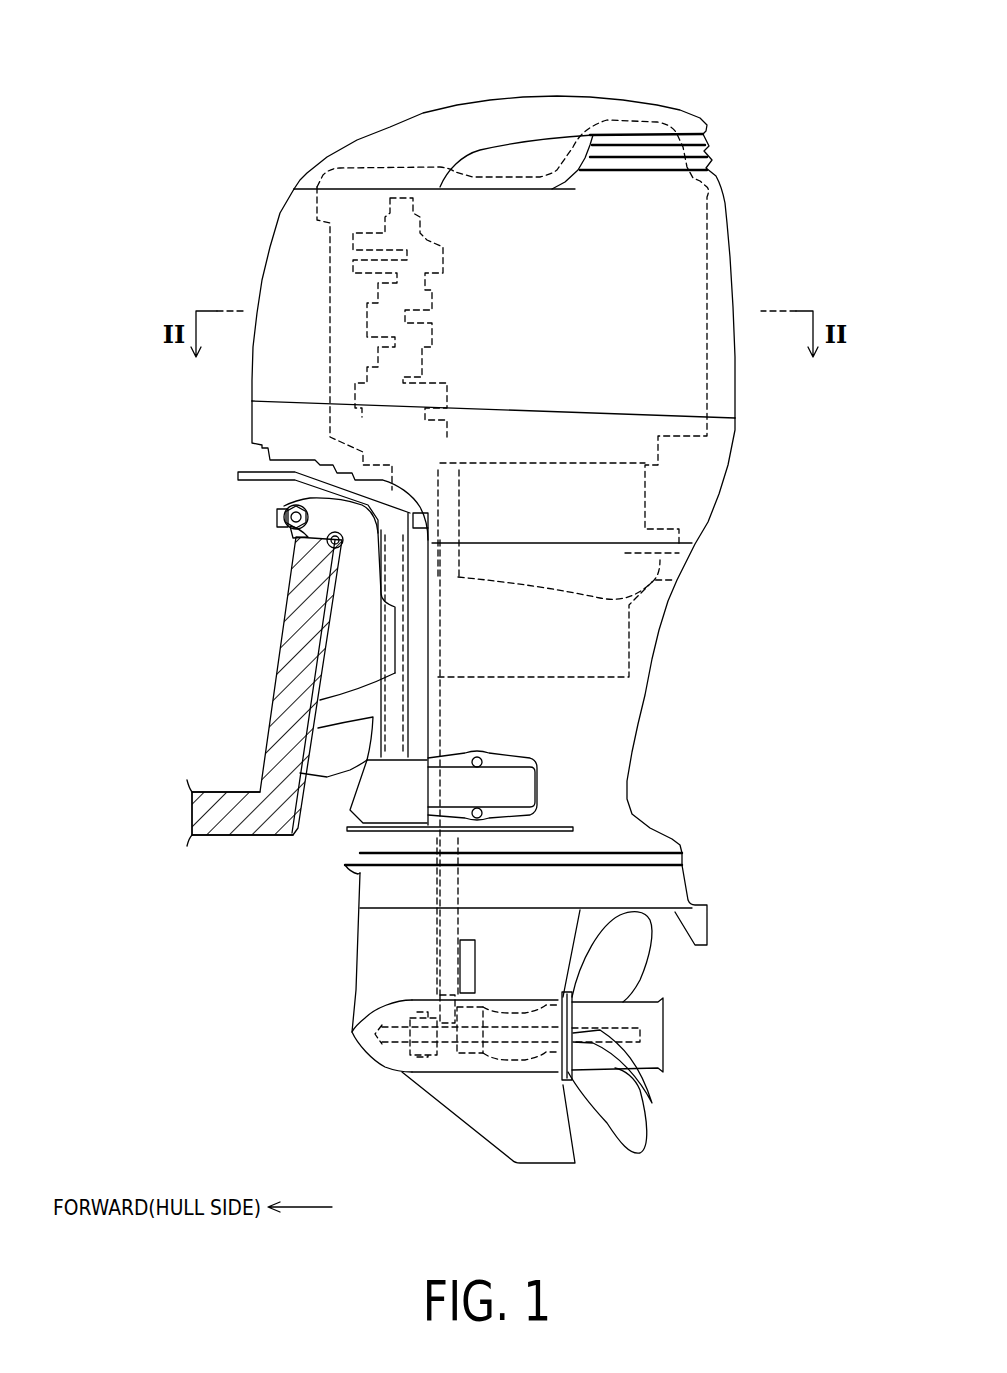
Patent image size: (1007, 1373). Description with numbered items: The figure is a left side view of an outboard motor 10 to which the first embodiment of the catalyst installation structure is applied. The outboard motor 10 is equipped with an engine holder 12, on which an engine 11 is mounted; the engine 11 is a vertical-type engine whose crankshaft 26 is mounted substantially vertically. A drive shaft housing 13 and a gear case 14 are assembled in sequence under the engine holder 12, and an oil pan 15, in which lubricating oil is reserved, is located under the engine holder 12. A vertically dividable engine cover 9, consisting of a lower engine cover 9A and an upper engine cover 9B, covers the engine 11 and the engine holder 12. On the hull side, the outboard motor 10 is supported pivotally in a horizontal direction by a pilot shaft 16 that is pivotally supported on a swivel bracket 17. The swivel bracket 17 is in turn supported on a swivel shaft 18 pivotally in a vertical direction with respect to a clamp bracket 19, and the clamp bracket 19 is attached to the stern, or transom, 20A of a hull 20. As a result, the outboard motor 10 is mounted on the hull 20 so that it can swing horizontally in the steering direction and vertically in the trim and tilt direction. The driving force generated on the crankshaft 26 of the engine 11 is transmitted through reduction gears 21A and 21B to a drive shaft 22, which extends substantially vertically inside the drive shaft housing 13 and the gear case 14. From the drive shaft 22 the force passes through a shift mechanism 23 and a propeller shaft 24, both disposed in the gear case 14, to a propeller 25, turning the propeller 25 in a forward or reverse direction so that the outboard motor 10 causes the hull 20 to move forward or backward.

The engine cover 9 is at (800, 383).
The lower engine cover 9A is at (720, 443).
The upper engine cover 9B is at (720, 388).
The outboard motor 10 is at (688, 84).
The engine 11 is at (702, 231).
The engine holder 12 is at (647, 511).
The drive shaft housing 13 is at (625, 748).
The gear case 14 is at (362, 938).
The oil pan 15 is at (614, 645).
The pilot shaft 16 is at (383, 628).
The swivel bracket 17 is at (397, 580).
The swivel shaft 18 is at (277, 517).
The clamp bracket 19 is at (337, 680).
The hull 20 is at (228, 845).
The stern (transom) 20A is at (282, 727).
The reduction gear 21A is at (363, 452).
The reduction gear 21B is at (477, 452).
The drive shaft 22 is at (600, 598).
The shift mechanism 23 is at (433, 1045).
The propeller shaft 24 is at (508, 1033).
The propeller 25 is at (632, 975).
The crankshaft 26 is at (371, 330).